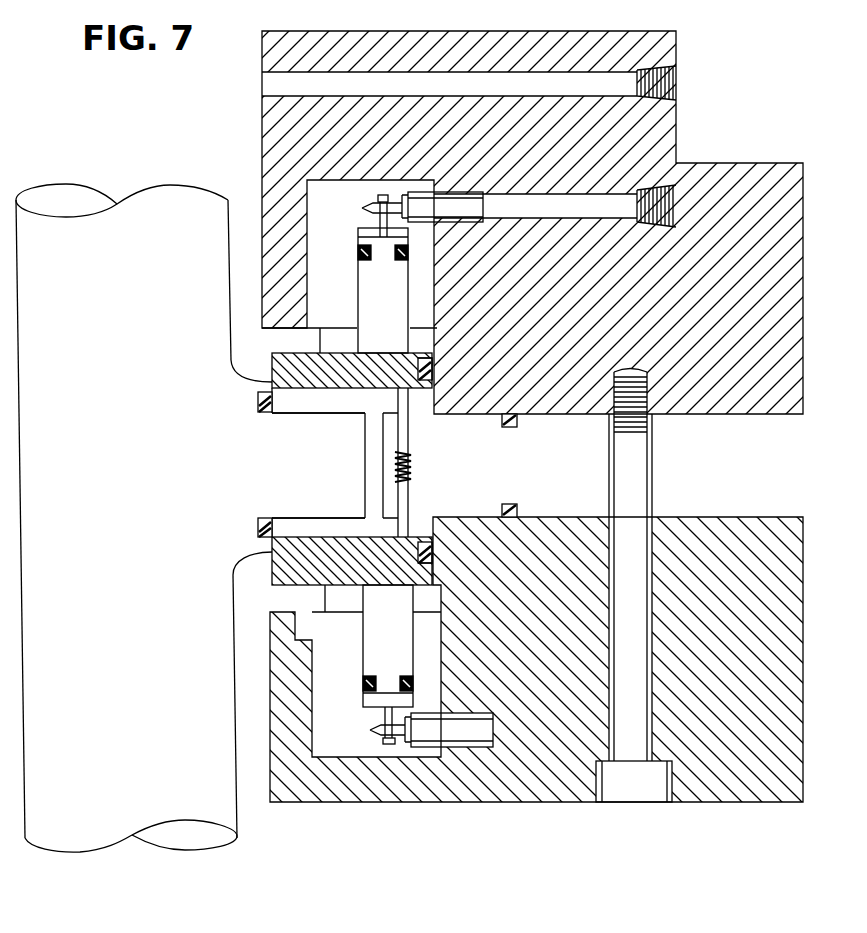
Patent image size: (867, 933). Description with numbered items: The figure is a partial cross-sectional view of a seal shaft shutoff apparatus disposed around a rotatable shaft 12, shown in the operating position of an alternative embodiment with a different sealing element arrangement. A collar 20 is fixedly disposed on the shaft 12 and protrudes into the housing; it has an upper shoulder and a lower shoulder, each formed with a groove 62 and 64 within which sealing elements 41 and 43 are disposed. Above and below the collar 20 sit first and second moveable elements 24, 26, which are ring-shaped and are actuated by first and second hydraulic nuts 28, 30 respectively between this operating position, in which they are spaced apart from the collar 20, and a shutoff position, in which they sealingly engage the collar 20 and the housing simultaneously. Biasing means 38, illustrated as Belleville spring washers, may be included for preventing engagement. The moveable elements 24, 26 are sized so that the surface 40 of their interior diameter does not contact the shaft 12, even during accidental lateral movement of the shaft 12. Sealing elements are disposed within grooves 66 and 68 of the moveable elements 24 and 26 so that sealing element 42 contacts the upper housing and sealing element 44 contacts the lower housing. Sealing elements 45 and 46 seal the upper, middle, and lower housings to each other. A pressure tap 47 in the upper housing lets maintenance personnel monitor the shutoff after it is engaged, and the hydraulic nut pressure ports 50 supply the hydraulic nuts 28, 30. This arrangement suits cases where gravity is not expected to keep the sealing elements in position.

The shaft 12 is at (143, 487).
The collar 20 is at (332, 477).
The first moveable element 24 is at (366, 384).
The second moveable element 26 is at (364, 574).
The first hydraulic nut 28 is at (397, 310).
The second hydraulic nut 30 is at (402, 652).
The biasing means 38 is at (409, 468).
The surface of the interior diameter 40 is at (262, 382).
The sealing element 41 is at (262, 414).
The sealing element 42 is at (432, 367).
The sealing element 43 is at (268, 518).
The sealing element 44 is at (432, 545).
The sealing element 45 is at (506, 504).
The sealing element 46 is at (512, 428).
The pressure tap 47 is at (677, 70).
The hydraulic nut pressure ports 50 is at (677, 207).
The groove 62 is at (258, 400).
The groove 64 is at (258, 530).
The groove 66 is at (433, 357).
The groove 68 is at (435, 577).